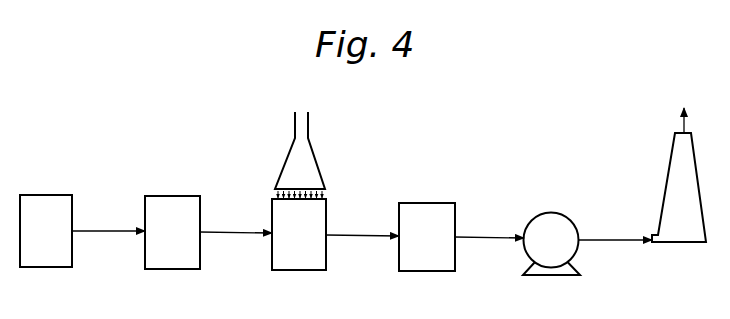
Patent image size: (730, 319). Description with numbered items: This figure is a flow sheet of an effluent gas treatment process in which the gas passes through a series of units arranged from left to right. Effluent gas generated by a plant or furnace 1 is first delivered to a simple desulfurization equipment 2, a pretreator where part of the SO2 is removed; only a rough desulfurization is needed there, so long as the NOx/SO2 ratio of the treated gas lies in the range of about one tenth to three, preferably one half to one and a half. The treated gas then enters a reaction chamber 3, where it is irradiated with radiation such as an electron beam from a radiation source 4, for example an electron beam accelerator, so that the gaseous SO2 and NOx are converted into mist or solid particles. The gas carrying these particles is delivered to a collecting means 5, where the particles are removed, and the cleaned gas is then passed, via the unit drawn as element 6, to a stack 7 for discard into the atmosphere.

The plant or furnace 1 is at (46, 231).
The simple desulfurization equipment 2 is at (172, 232).
The reaction chamber 3 is at (299, 234).
The radiation source 4 is at (300, 155).
The collecting means 5 is at (427, 237).
The pump 6 is at (551, 244).
The stack 7 is at (679, 175).